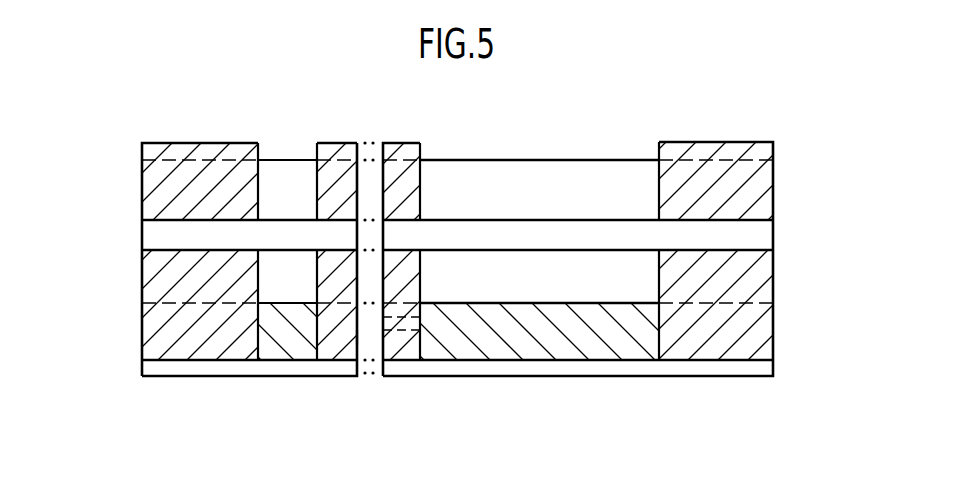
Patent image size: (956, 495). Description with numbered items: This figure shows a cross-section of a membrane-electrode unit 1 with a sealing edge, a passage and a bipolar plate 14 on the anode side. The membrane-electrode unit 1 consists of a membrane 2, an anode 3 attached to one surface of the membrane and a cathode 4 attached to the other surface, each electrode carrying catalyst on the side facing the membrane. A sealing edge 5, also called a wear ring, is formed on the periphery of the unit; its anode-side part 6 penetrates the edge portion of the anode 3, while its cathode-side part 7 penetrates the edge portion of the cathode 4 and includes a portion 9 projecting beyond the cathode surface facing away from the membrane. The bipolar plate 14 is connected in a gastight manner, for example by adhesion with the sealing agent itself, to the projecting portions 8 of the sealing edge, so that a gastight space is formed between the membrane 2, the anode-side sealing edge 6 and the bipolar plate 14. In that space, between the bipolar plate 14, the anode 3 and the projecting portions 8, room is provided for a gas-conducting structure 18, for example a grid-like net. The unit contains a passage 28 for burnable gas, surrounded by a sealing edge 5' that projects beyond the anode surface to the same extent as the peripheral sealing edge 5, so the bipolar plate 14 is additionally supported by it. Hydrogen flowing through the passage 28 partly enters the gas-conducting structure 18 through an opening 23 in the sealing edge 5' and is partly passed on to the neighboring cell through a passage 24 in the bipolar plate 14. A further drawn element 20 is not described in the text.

The membrane-electrode unit 1 is at (586, 147).
The membrane 2 is at (747, 229).
The anode 3 is at (488, 285).
The cathode 4 is at (506, 187).
The sealing edge 5 is at (438, 260).
The sealing edge around passage 5' is at (368, 229).
The anode-side part of the sealing edge 6 is at (167, 273).
The cathode-side part of the sealing edge 7 is at (165, 190).
The projecting portions of the sealing edge 8 is at (173, 333).
The projecting portion of the cathode-side sealing edge 9 is at (148, 147).
The bipolar plate 14 is at (710, 365).
The gas-conducting structure 18 is at (497, 327).
The wedge filler 20 is at (287, 331).
The opening in sealing edge 23 is at (401, 323).
The passage in bipolar plate 24 is at (364, 372).
The passage 28 is at (368, 332).